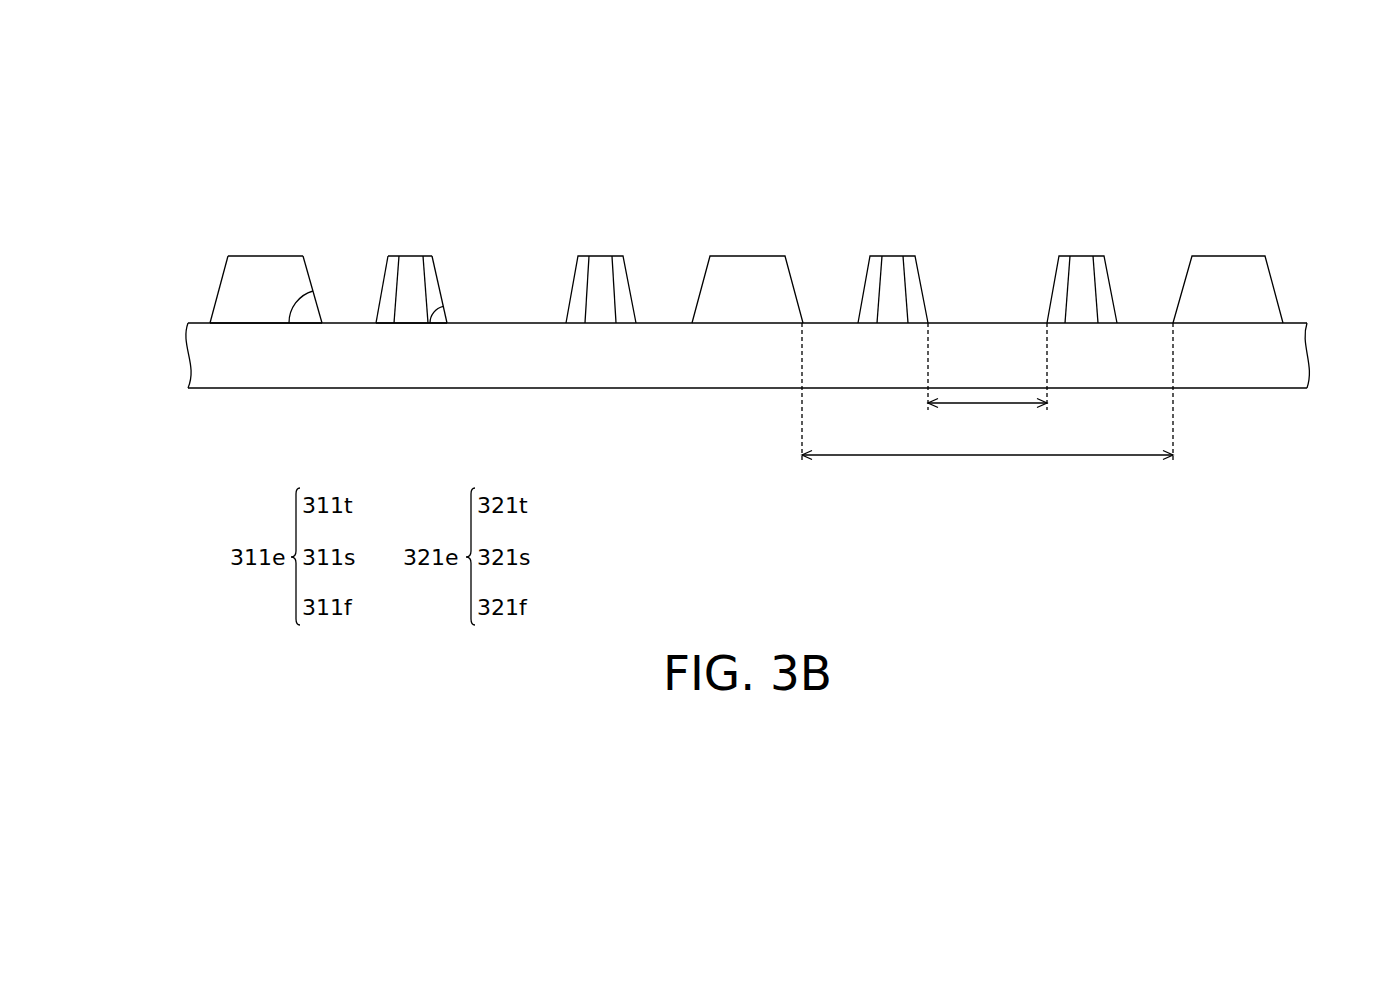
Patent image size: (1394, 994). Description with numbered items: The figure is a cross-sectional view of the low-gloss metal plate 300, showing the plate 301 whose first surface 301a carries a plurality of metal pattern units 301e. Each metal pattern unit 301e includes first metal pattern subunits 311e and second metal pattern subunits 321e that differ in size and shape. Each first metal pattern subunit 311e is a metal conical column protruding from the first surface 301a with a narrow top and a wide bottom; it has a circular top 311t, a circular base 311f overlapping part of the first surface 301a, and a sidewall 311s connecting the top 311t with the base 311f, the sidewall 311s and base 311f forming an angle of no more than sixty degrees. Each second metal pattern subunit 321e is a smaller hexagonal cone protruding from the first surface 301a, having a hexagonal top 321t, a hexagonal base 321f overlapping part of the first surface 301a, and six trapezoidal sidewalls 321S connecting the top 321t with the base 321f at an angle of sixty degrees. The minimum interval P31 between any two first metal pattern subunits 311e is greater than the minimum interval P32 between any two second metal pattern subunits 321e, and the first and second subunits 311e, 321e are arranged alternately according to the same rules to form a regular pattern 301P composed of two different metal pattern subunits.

The low-gloss metal plate 300 is at (142, 86).
The substrate 301 is at (1318, 257).
The first surface 301a is at (832, 323).
The regular pattern 301P is at (804, 110).
The metal pattern unit 301e is at (1253, 181).
The first metal pattern subunit 311e is at (1228, 256).
The circular top 311t is at (265, 256).
The sidewall 311s is at (310, 287).
The circular base 311f is at (265, 325).
The second metal pattern subunit 321e is at (1082, 256).
The hexagonal top 321t is at (410, 256).
The trapezoidal sidewall 321S is at (438, 272).
The hexagonal base 321f is at (415, 325).
The minimum interval P31 is at (987, 404).
The minimum interval P32 is at (987, 378).